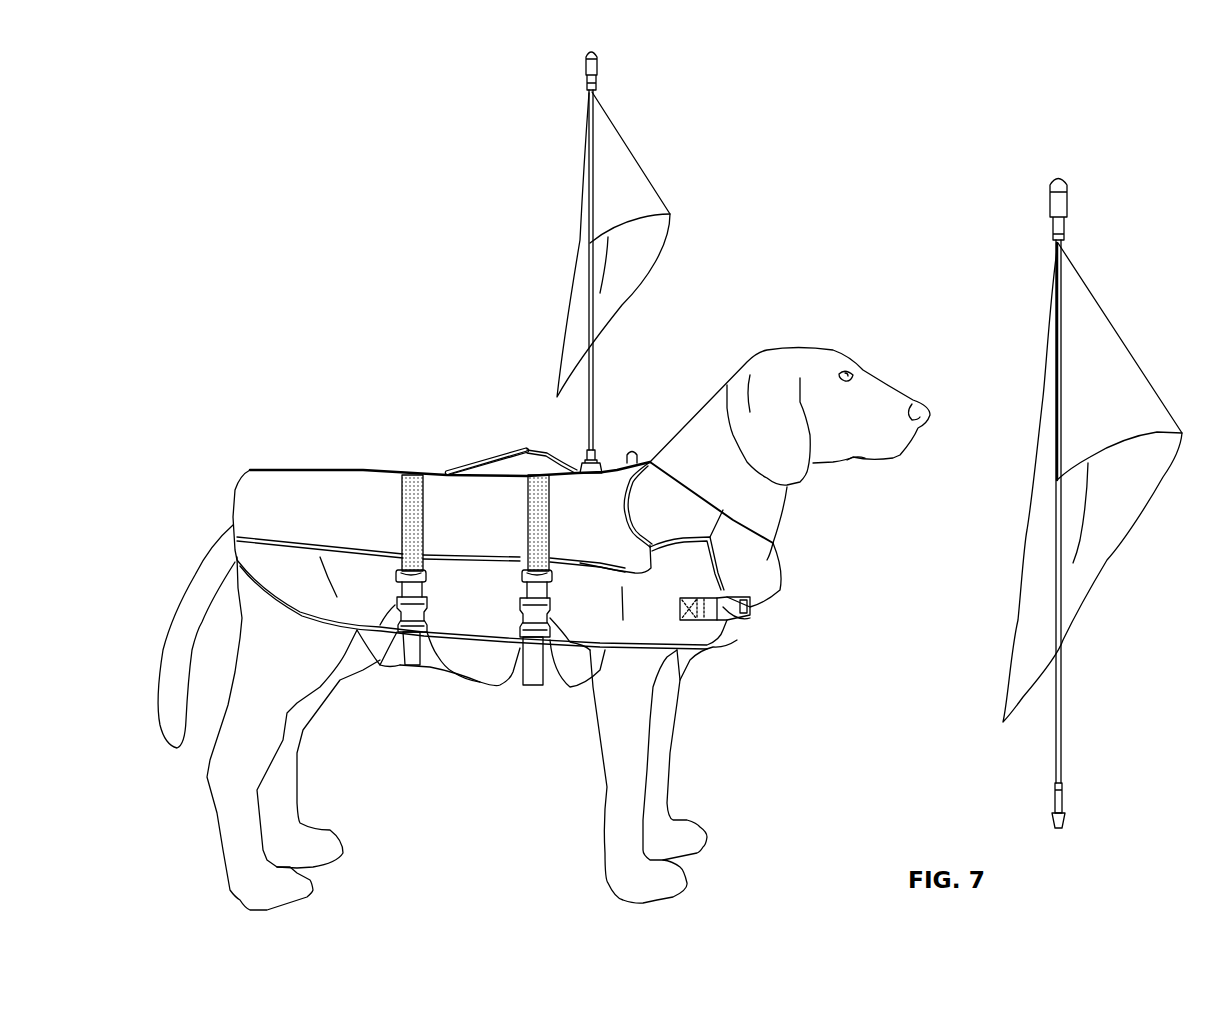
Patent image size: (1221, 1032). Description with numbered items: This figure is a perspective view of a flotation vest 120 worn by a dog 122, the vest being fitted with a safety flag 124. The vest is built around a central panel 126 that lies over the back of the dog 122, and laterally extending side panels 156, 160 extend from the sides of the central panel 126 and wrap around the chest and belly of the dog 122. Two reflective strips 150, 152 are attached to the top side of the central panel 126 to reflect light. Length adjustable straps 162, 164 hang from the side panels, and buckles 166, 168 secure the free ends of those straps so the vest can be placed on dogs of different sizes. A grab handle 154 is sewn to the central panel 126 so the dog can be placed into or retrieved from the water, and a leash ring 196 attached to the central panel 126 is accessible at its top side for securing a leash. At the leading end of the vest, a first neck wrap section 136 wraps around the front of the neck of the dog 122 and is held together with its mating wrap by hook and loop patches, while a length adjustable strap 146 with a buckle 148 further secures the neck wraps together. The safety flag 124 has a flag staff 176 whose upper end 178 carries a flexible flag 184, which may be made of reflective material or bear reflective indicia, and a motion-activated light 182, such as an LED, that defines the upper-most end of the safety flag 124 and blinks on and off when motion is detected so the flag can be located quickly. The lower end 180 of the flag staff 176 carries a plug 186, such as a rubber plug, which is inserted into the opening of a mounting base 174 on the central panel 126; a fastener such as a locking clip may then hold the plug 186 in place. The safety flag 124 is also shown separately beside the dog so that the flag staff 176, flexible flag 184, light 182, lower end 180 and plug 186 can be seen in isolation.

The flotation vest 120 is at (262, 447).
The dog 122 is at (863, 333).
The safety flag 124 is at (1107, 617).
The central panel 126 is at (478, 538).
The first neck wrap section 136 is at (750, 547).
The length adjustable strap 146 is at (700, 620).
The buckle 148 is at (733, 613).
The reflective strip 150 is at (528, 515).
The reflective strip 152 is at (403, 505).
The grab handle 154 is at (480, 465).
The side panel 156 is at (470, 662).
The side panel 160 is at (488, 615).
The length adjustable strap 162 is at (527, 685).
The length adjustable strap 164 is at (407, 657).
The buckle 166 is at (543, 613).
The buckle 168 is at (377, 635).
The mounting base 174 is at (577, 463).
The flag staff 176 is at (594, 400).
The upper end 178 is at (1100, 265).
The lower end 180 is at (1075, 787).
The motion-activated light 182 is at (1048, 200).
The flexible flag 184 is at (633, 178).
The plug 186 is at (1065, 823).
The leash ring 196 is at (643, 452).